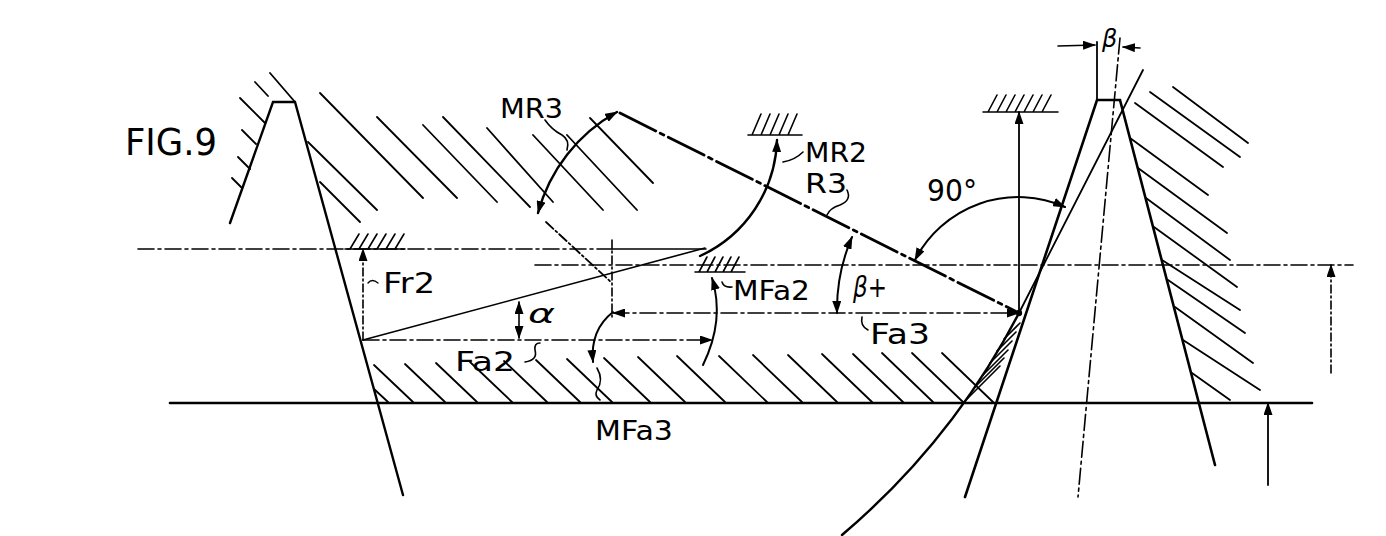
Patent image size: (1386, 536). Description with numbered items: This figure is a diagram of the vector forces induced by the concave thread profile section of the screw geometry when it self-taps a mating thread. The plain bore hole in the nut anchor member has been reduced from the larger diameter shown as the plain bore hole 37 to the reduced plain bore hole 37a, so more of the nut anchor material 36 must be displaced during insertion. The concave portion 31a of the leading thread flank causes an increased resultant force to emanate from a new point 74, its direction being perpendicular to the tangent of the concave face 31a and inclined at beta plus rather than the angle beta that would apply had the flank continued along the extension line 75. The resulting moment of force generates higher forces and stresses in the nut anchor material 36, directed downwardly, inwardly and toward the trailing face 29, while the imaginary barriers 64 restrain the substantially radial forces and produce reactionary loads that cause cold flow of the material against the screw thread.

The trailing face 29 is at (393, 450).
The concave portion of the leading thread profile flank 31a is at (910, 472).
The nut anchor material 36 is at (387, 85).
The plain bore hole 37 is at (1331, 345).
The reduced plain bore hole 37a is at (1268, 457).
The imaginary barriers 64 is at (400, 232).
The point 74 is at (1027, 313).
The extension line 75 is at (978, 460).